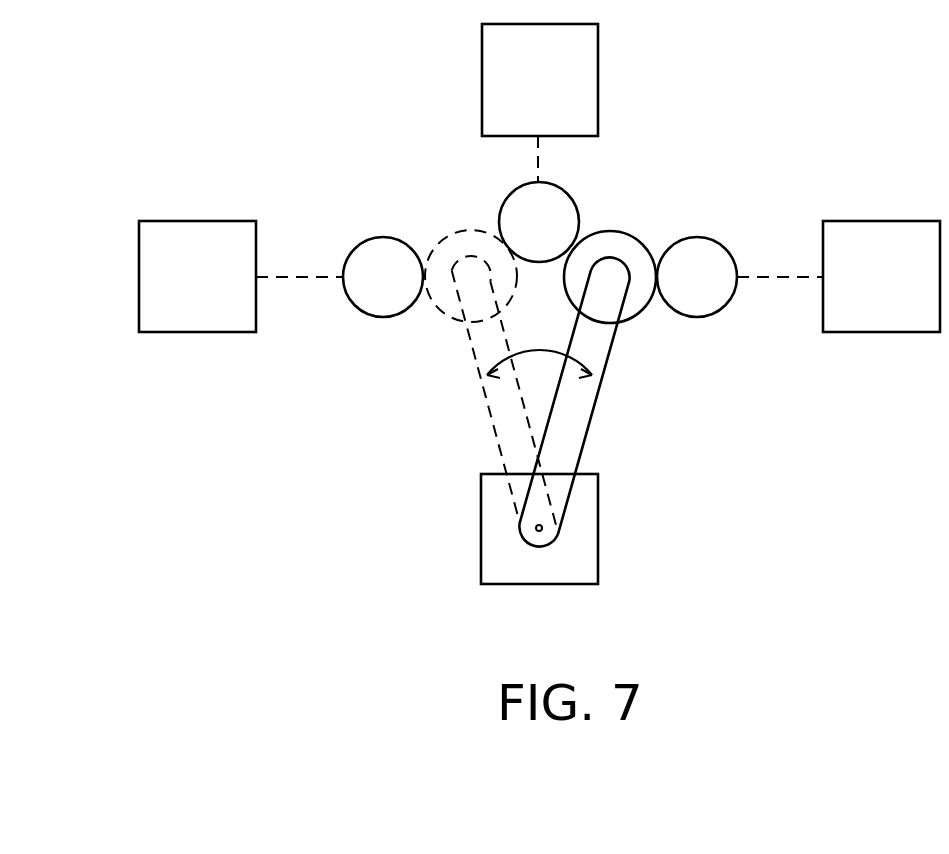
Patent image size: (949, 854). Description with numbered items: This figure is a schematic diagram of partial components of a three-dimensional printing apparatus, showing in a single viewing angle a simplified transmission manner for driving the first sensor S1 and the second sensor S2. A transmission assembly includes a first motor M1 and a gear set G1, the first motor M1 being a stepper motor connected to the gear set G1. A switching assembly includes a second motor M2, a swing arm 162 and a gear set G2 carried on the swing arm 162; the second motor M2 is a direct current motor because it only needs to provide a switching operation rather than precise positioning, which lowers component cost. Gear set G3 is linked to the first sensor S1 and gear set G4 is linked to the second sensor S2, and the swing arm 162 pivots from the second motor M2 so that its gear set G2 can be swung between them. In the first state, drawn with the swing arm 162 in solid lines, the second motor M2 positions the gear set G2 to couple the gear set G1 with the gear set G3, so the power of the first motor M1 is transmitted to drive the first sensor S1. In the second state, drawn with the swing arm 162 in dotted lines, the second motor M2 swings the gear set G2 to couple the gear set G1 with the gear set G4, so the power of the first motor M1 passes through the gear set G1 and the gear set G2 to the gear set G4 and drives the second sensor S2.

The swing arm 162 is at (582, 417).
The first motor M1 is at (540, 80).
The second motor M2 is at (539, 530).
The first sensor S1 is at (881, 276).
The second sensor S2 is at (197, 276).
The gear set G1 is at (539, 222).
The gear set G2 is at (540, 275).
The gear set G3 is at (697, 277).
The gear set G4 is at (383, 277).